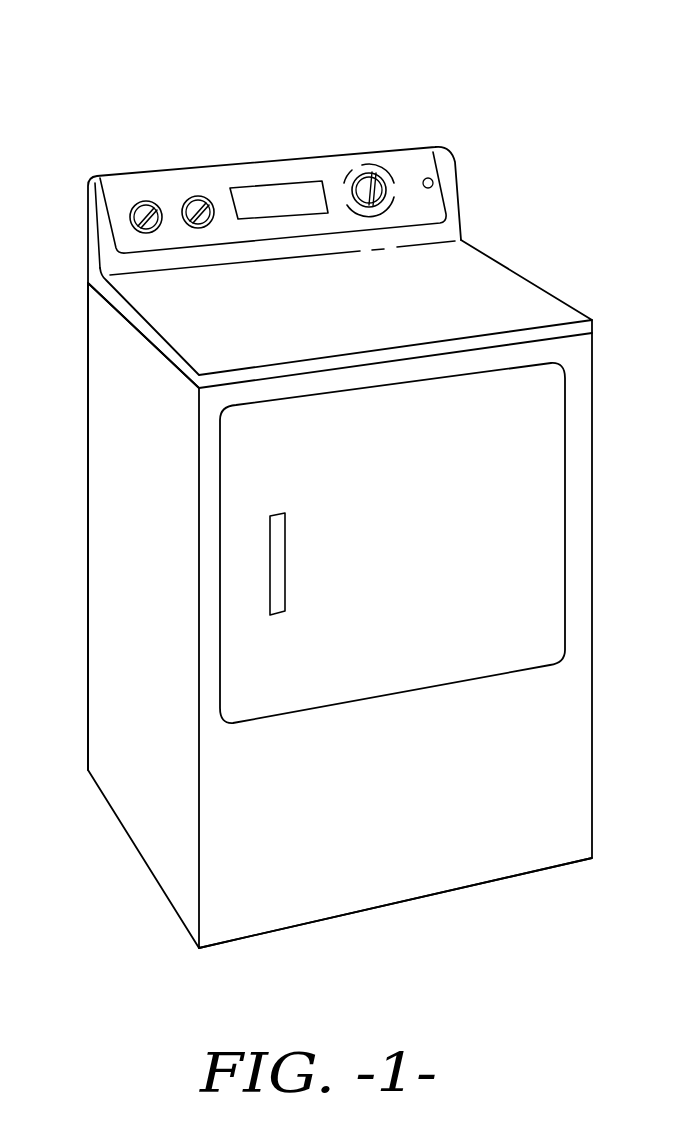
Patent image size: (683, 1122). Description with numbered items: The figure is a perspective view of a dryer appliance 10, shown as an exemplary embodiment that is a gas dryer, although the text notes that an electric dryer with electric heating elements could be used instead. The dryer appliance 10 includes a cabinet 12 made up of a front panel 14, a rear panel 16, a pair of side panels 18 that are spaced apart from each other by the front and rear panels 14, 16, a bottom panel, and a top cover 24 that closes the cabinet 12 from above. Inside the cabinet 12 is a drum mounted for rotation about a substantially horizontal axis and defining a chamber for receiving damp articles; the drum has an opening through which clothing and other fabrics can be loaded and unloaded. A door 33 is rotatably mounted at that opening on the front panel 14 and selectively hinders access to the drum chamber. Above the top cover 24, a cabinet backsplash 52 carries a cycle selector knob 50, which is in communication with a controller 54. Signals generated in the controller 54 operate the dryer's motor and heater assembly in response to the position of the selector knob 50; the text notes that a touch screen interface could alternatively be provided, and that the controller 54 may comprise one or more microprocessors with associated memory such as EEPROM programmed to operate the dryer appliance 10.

The dryer appliance 10 is at (110, 82).
The cabinet 12 is at (570, 778).
The front panel 14 is at (482, 853).
The rear panel 16 is at (110, 377).
The side panel 18 is at (118, 527).
The top cover 24 is at (485, 287).
The door 33 is at (537, 520).
The cycle selector knob 50 is at (188, 197).
The cabinet backsplash 52 is at (122, 192).
The controller 54 is at (275, 198).